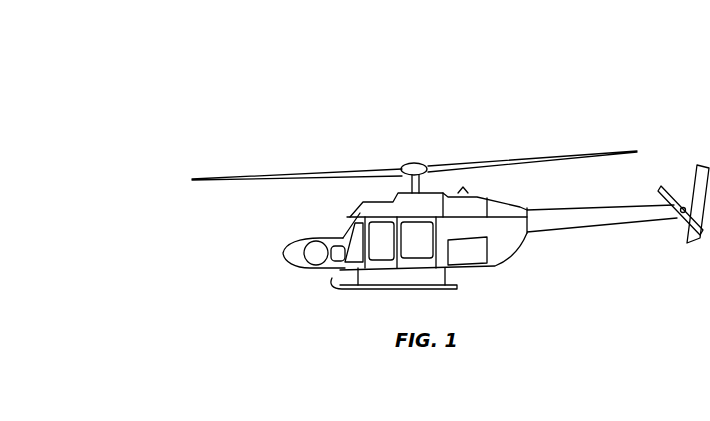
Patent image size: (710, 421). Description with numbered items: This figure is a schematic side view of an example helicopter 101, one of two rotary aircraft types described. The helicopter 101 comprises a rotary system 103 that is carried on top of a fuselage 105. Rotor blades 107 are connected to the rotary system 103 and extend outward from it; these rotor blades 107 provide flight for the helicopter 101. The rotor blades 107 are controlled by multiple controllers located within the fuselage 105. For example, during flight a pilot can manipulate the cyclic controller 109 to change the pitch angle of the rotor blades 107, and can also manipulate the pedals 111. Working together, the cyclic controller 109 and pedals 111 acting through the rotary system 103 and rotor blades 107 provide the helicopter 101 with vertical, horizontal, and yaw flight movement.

The helicopter 101 is at (224, 86).
The rotary system 103 is at (401, 152).
The fuselage 105 is at (347, 222).
The rotor blades 107 is at (538, 164).
The cyclic controller 109 is at (305, 247).
The pedals 111 is at (318, 277).